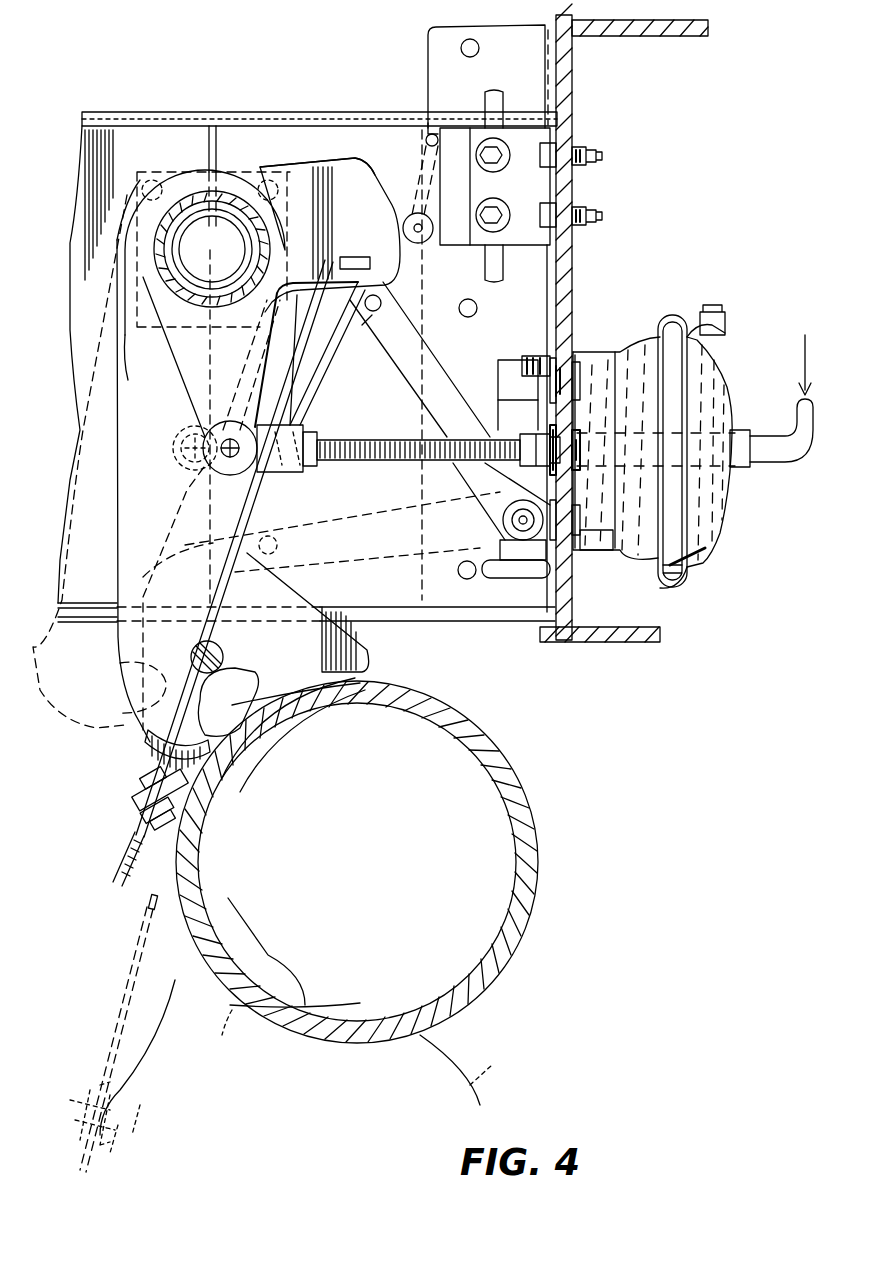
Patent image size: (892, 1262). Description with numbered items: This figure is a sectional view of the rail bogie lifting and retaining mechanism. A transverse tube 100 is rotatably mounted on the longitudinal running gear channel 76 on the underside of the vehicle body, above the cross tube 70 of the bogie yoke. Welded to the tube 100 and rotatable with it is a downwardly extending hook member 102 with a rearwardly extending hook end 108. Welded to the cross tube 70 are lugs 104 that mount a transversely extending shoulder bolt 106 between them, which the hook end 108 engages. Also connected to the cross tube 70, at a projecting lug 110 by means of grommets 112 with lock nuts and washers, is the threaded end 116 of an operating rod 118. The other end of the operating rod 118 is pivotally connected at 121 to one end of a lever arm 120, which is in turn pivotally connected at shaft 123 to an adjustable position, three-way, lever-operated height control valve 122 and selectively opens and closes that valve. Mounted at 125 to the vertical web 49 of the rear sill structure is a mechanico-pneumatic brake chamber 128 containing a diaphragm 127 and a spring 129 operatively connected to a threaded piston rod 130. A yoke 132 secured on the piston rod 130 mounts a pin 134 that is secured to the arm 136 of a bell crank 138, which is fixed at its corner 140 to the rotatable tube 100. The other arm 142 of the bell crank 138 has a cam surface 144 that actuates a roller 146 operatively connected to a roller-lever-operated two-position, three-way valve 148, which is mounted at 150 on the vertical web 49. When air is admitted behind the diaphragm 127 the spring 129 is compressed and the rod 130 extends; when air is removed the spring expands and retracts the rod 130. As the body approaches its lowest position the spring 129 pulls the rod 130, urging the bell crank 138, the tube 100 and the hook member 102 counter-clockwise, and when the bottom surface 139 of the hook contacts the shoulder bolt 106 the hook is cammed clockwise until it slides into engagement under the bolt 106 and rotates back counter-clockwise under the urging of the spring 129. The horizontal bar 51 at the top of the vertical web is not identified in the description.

The vertical web 49 is at (572, 248).
The upper flange 51 is at (640, 38).
The cross tube 70 is at (432, 688).
The longitudinal running gear channel 76 is at (202, 112).
The transverse tube 100 is at (232, 210).
The hook member 102 is at (79, 461).
The lug 104 is at (145, 745).
The shoulder bolt 106 is at (224, 652).
The hook end 108 is at (248, 682).
The projecting lug 110 is at (136, 792).
The grommet 112 is at (142, 812).
The threaded end 116 is at (116, 866).
The operating rod 118 is at (228, 594).
The lever arm 120 is at (394, 352).
The pivotal connection 121 is at (360, 262).
The height control valve 122 is at (498, 374).
The shaft 123 is at (503, 540).
The mounting 125 is at (570, 374).
The diaphragm 127 is at (705, 557).
The brake chamber 128 is at (721, 503).
The spring 129 is at (658, 328).
The threaded piston rod 130 is at (349, 462).
The yoke 132 is at (288, 472).
The pin 134 is at (176, 444).
The arm 136 is at (190, 362).
The bell crank 138 is at (292, 150).
The bottom surface 139 is at (240, 710).
The corner 140 is at (193, 195).
The other arm 142 is at (316, 168).
The cam surface 144 is at (424, 242).
The roller 146 is at (418, 188).
The roller-lever-operated valve 148 is at (548, 136).
The mounting 150 is at (586, 152).